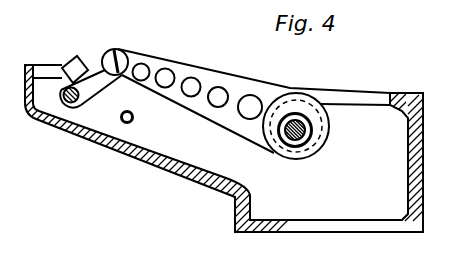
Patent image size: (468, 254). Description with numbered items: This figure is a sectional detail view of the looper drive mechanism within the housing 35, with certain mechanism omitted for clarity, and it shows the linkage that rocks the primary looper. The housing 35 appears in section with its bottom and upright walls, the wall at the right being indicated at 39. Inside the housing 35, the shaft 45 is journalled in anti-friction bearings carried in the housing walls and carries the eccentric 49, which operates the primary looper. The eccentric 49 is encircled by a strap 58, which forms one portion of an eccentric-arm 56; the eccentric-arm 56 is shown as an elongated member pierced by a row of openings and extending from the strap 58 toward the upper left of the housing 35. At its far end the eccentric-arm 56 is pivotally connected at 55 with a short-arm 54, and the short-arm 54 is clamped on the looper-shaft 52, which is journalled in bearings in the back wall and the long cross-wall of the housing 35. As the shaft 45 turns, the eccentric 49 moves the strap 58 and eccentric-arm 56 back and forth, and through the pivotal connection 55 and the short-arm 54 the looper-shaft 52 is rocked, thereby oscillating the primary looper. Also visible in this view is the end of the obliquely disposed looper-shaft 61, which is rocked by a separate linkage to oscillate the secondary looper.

The housing 35 is at (230, 212).
The side wall of housing 39 is at (415, 168).
The shaft 45 is at (290, 140).
The eccentric 49 is at (316, 128).
The looper-shaft 52 is at (78, 101).
The short-arm 54 is at (100, 73).
The pivotal connection 55 is at (124, 57).
The eccentric-arm 56 is at (211, 82).
The strap 58 is at (330, 120).
The looper-shaft 61 is at (135, 117).